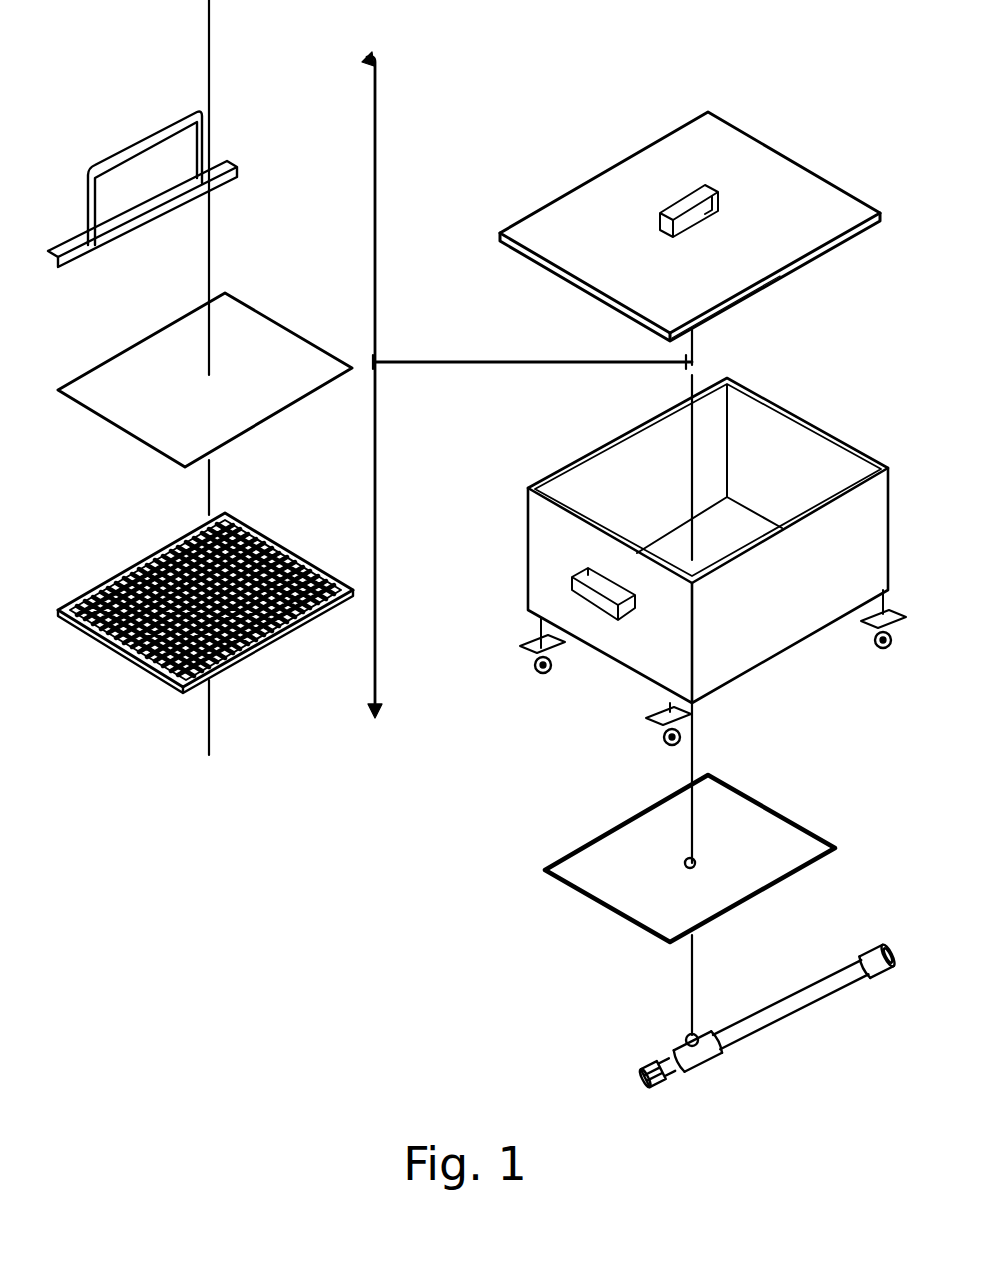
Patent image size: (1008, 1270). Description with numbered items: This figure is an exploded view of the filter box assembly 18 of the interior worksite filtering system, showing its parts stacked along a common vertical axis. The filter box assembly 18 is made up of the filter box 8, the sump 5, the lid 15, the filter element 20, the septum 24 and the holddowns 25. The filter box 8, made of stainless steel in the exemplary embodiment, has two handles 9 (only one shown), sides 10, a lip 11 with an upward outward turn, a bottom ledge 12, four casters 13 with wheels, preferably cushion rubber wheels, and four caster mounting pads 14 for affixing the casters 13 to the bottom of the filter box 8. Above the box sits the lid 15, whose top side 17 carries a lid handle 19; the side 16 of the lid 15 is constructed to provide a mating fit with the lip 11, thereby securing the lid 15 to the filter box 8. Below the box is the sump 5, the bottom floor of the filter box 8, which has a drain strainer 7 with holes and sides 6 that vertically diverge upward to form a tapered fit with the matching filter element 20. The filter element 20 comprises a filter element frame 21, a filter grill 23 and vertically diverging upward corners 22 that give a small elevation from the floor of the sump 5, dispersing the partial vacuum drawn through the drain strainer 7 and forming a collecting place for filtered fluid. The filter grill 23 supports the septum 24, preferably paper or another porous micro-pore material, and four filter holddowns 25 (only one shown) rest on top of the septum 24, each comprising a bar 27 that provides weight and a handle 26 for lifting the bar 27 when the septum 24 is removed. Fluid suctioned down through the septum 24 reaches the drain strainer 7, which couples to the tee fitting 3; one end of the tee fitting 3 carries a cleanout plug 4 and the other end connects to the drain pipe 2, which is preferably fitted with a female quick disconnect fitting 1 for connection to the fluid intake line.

The female quick disconnect fitting 1 is at (877, 961).
The drain pipe 2 is at (790, 1004).
The tee fitting 3 is at (698, 1051).
The cleanout plug 4 is at (657, 1072).
The sump 5 is at (690, 855).
The sides 6 is at (607, 823).
The drain strainer 7 is at (697, 860).
The filter box 8 is at (681, 550).
The handles 9 is at (567, 578).
The sides 10 is at (766, 626).
The lip 11 is at (770, 393).
The bottom ledge 12 is at (750, 518).
The casters 13 is at (660, 735).
The caster mounting pads 14 is at (533, 640).
The lid 15 is at (492, 235).
The side 16 is at (717, 307).
The top side 17 is at (667, 158).
The filter box assembly 18 is at (654, 194).
The lid handle 19 is at (713, 192).
The filter element 20 is at (205, 600).
The filter element frame 21 is at (230, 655).
The vertically diverging upward corners 22 is at (352, 600).
The filter grill 23 is at (137, 632).
The septum 24 is at (262, 340).
The filter holddowns 25 is at (161, 182).
The handle 26 is at (137, 137).
The bar 27 is at (118, 228).